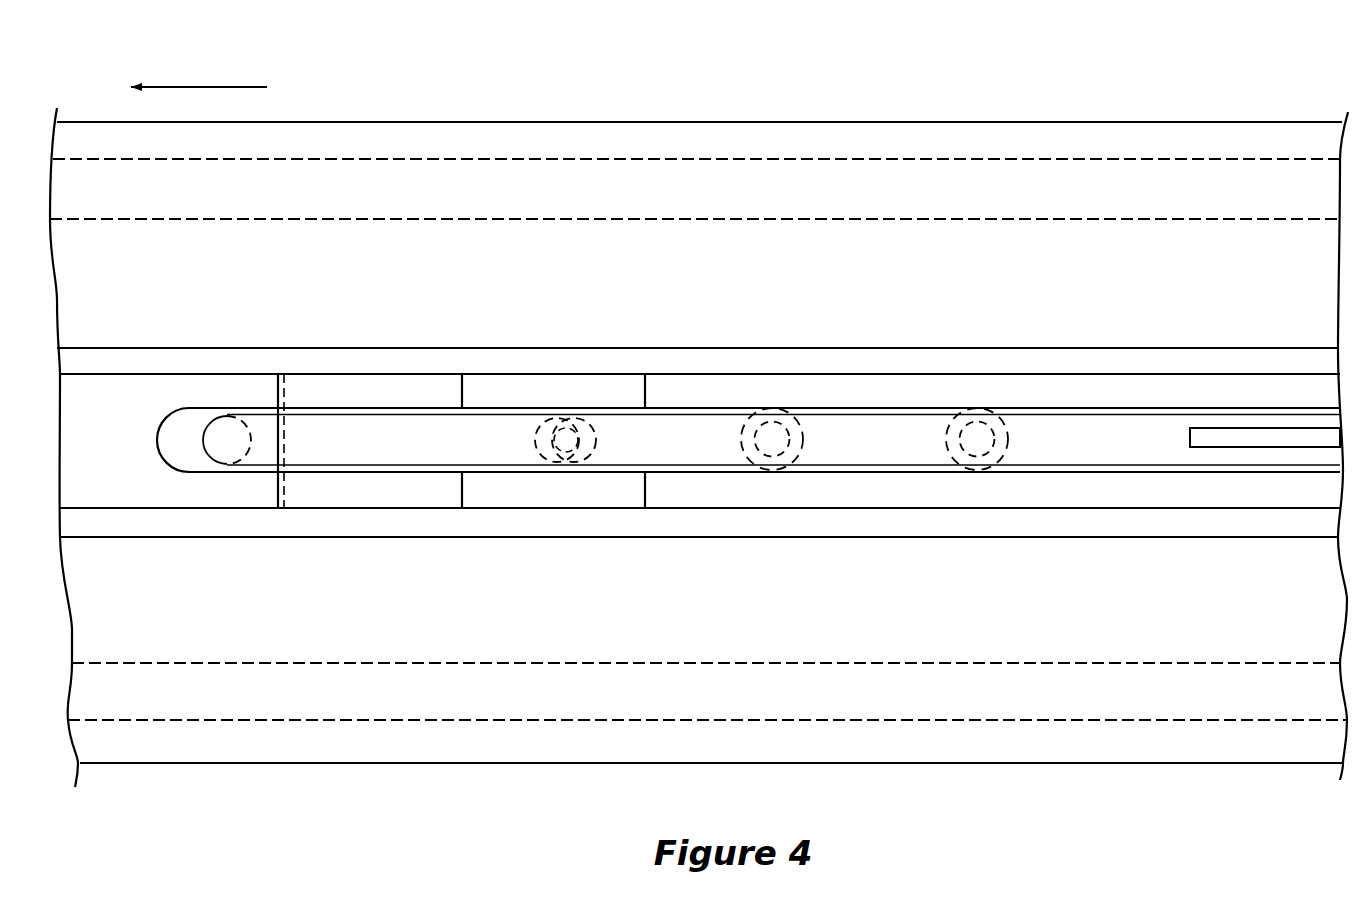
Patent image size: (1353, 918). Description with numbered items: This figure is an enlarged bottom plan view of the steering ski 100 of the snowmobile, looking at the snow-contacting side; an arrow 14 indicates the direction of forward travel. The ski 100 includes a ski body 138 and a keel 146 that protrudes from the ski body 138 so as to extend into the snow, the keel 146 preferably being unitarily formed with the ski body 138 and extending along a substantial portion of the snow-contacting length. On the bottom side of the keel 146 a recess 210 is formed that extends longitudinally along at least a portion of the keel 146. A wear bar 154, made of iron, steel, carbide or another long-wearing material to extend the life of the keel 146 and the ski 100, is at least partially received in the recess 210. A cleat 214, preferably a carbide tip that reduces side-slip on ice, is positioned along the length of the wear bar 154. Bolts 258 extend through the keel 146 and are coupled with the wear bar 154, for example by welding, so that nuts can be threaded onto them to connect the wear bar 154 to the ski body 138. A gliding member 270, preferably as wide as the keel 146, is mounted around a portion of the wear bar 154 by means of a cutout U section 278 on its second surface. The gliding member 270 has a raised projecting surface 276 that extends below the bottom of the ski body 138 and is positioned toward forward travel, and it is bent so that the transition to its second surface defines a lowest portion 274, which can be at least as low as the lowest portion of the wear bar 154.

The forward direction arrow 14 is at (192, 86).
The ski 100 is at (1219, 75).
The ski body 138 is at (1099, 117).
The keel 146 is at (1072, 361).
The wear bar 154 is at (835, 433).
The recess 210 is at (1123, 408).
The cleat 214 is at (1270, 428).
The bolt 258 is at (593, 420).
The gliding member 270 is at (405, 371).
The lowest portion 274 is at (462, 497).
The raised projecting surface 276 is at (328, 495).
The cutout U section 278 is at (568, 447).